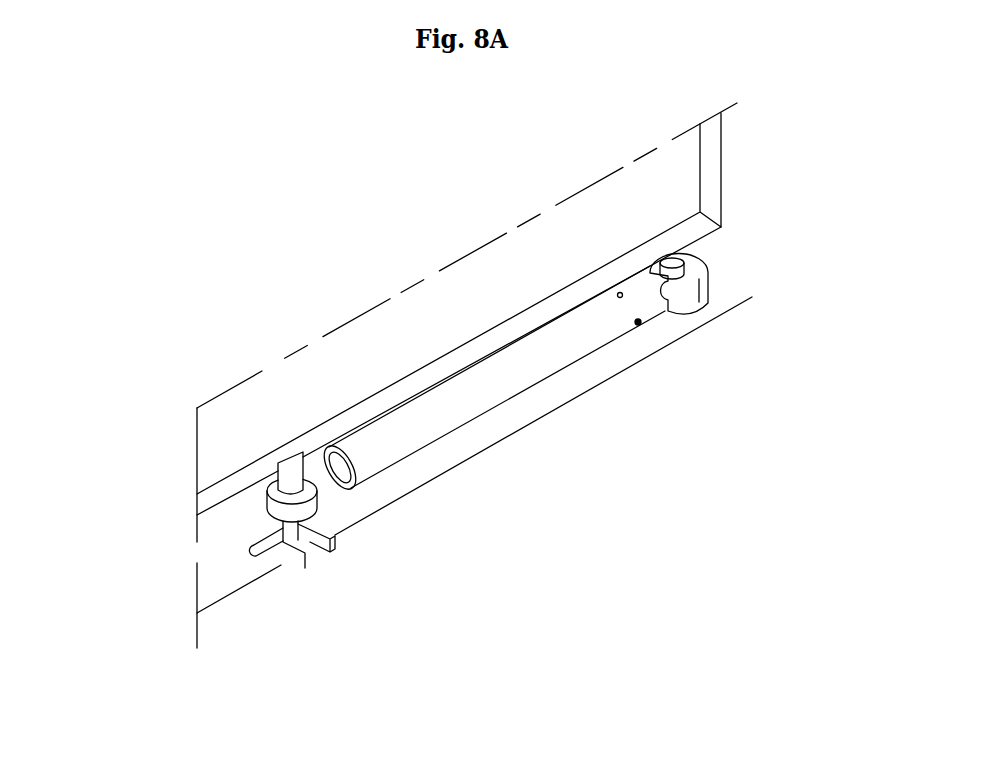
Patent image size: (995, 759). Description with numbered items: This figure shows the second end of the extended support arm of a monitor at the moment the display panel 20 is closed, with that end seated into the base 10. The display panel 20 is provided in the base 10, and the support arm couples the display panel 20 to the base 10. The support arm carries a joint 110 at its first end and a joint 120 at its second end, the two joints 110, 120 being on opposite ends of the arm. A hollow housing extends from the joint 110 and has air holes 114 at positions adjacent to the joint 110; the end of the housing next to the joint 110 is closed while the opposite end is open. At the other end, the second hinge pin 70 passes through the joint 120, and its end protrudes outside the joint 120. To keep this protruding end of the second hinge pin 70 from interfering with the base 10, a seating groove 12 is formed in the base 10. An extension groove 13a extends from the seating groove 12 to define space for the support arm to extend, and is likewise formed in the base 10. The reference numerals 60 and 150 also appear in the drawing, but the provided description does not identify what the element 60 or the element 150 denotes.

The base 10 is at (382, 503).
The seating groove 12 is at (323, 548).
The extension groove 13a is at (247, 549).
The display panel 20 is at (235, 418).
The fixing bolt 60 is at (688, 253).
The second hinge pin 70 is at (287, 540).
The joint 110 is at (703, 308).
The air holes 114 is at (638, 322).
The joint 120 is at (266, 509).
The rod 150 is at (533, 365).